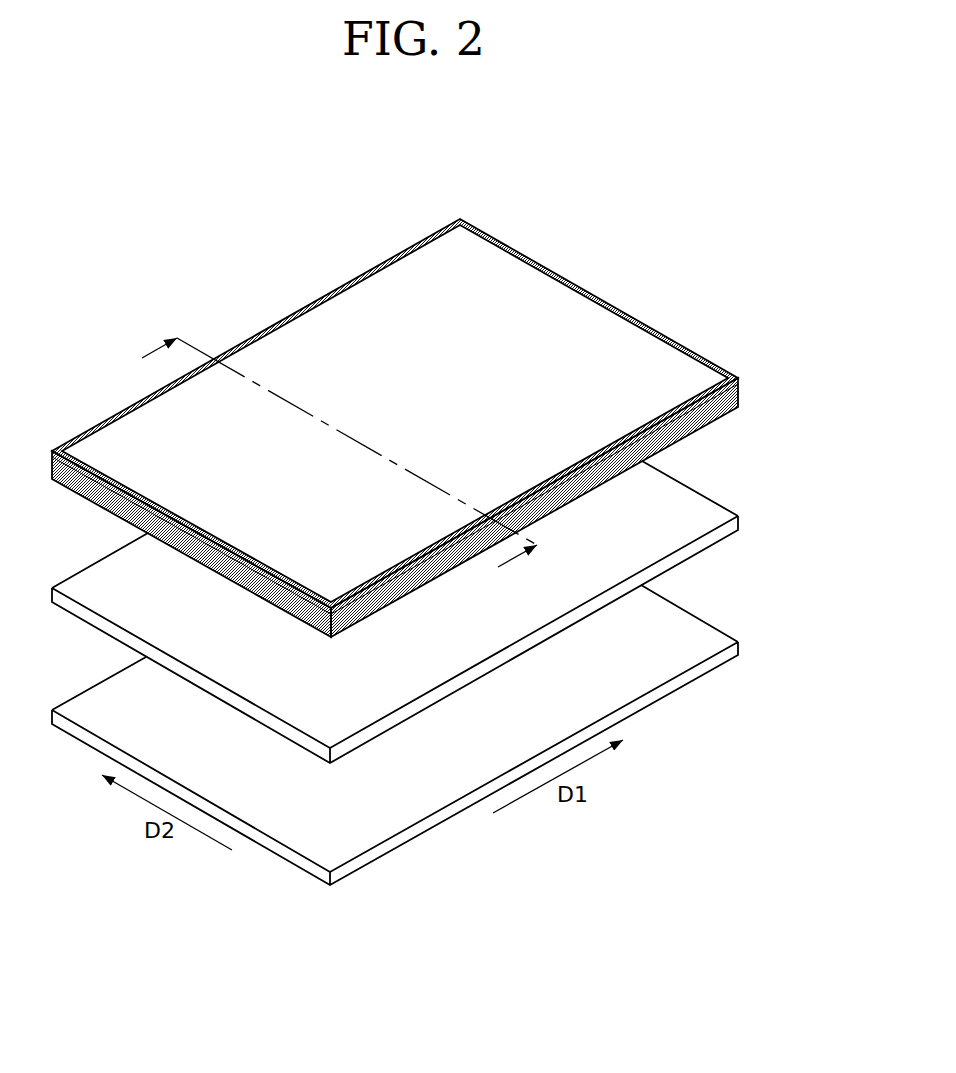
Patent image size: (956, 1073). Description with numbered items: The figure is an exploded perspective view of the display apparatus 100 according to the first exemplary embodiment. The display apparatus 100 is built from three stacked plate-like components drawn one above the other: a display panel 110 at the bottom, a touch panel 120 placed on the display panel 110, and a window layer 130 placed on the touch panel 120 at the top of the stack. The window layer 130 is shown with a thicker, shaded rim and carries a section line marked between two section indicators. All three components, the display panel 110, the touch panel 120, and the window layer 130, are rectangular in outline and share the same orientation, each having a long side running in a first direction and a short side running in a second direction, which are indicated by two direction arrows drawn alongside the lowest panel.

The display apparatus 100 is at (650, 236).
The display panel 110 is at (740, 648).
The touch panel 120 is at (740, 523).
The window layer 130 is at (740, 398).